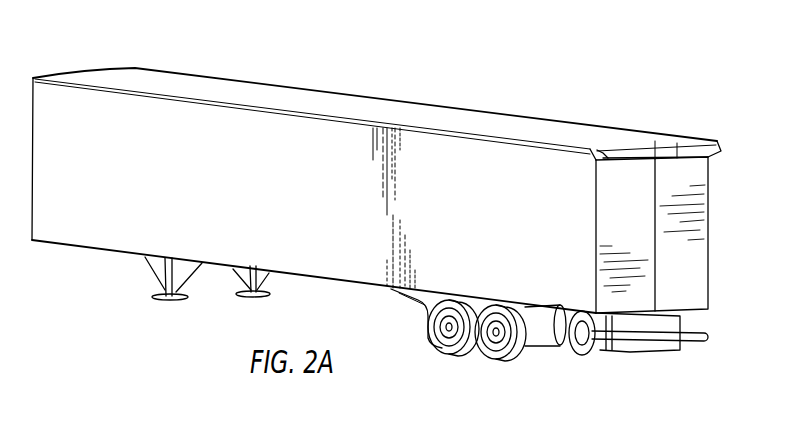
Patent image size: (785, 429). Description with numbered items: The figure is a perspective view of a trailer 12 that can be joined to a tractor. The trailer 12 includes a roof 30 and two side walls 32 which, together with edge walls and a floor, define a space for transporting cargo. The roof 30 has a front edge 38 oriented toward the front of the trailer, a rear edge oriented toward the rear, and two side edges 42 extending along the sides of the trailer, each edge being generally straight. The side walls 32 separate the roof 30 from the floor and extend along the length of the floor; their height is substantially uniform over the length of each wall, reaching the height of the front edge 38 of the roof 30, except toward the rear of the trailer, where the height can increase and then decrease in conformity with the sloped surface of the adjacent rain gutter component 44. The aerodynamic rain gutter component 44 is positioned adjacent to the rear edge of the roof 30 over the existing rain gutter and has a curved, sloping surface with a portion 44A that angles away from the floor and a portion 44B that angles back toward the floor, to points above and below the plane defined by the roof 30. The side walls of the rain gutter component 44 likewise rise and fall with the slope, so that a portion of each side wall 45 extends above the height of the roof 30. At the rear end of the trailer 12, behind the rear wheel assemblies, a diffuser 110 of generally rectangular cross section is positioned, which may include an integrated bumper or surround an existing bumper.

The trailer 12 is at (397, 203).
The roof 30 is at (297, 102).
The side walls 32 is at (356, 267).
The front edge 38 is at (72, 72).
The side edges 42 is at (582, 127).
The rain gutter component 44 is at (673, 148).
The portion 44A is at (597, 150).
The portion 44B is at (722, 150).
The side wall 45 is at (592, 157).
The diffuser 110 is at (608, 350).